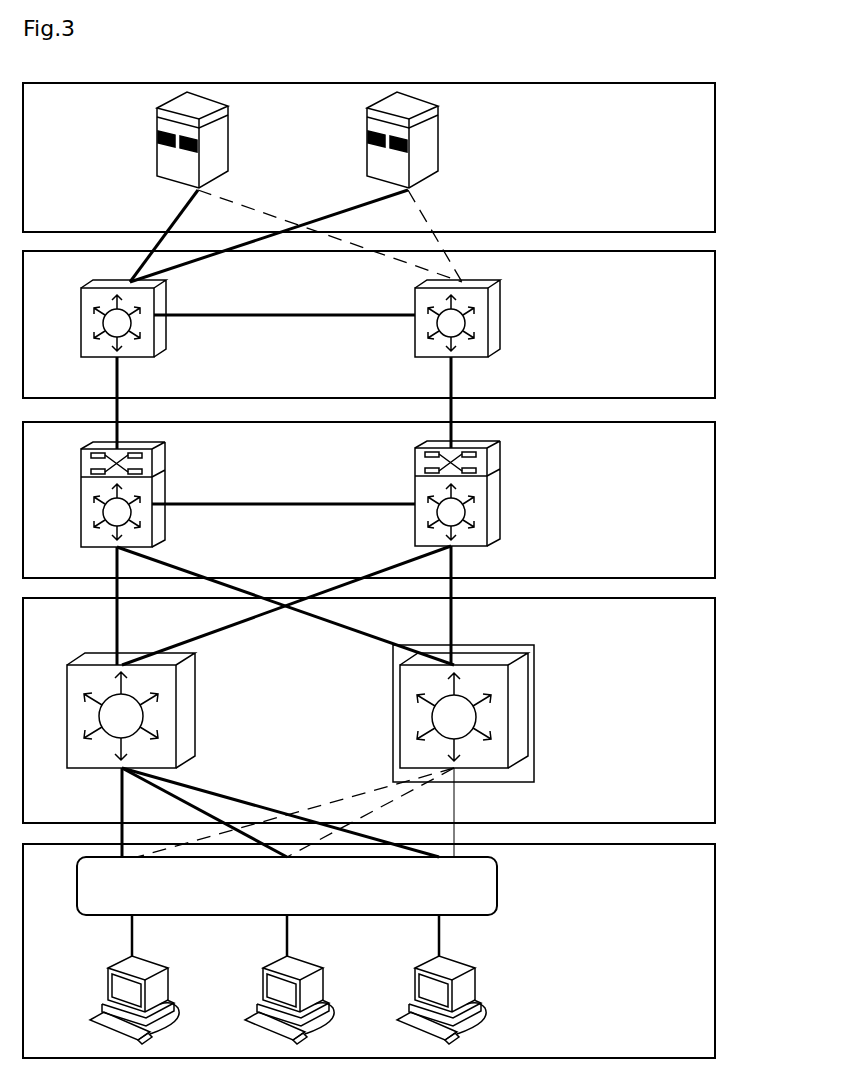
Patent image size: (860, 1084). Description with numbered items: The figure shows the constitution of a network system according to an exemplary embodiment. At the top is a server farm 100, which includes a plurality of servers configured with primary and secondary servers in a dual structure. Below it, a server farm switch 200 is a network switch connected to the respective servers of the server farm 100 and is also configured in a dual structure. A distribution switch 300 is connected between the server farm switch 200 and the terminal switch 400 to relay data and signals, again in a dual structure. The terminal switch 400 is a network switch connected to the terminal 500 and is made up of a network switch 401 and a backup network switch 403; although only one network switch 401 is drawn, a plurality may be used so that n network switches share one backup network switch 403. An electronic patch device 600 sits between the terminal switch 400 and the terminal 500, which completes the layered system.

The server farm 100 is at (715, 158).
The server farm switch 200 is at (715, 325).
The distribution switch 300 is at (715, 500).
The terminal switch 400 is at (413, 710).
The network switch 401 is at (196, 687).
The backup network switch 403 is at (520, 642).
The terminal 500 is at (413, 951).
The electronic patch device 600 is at (497, 887).